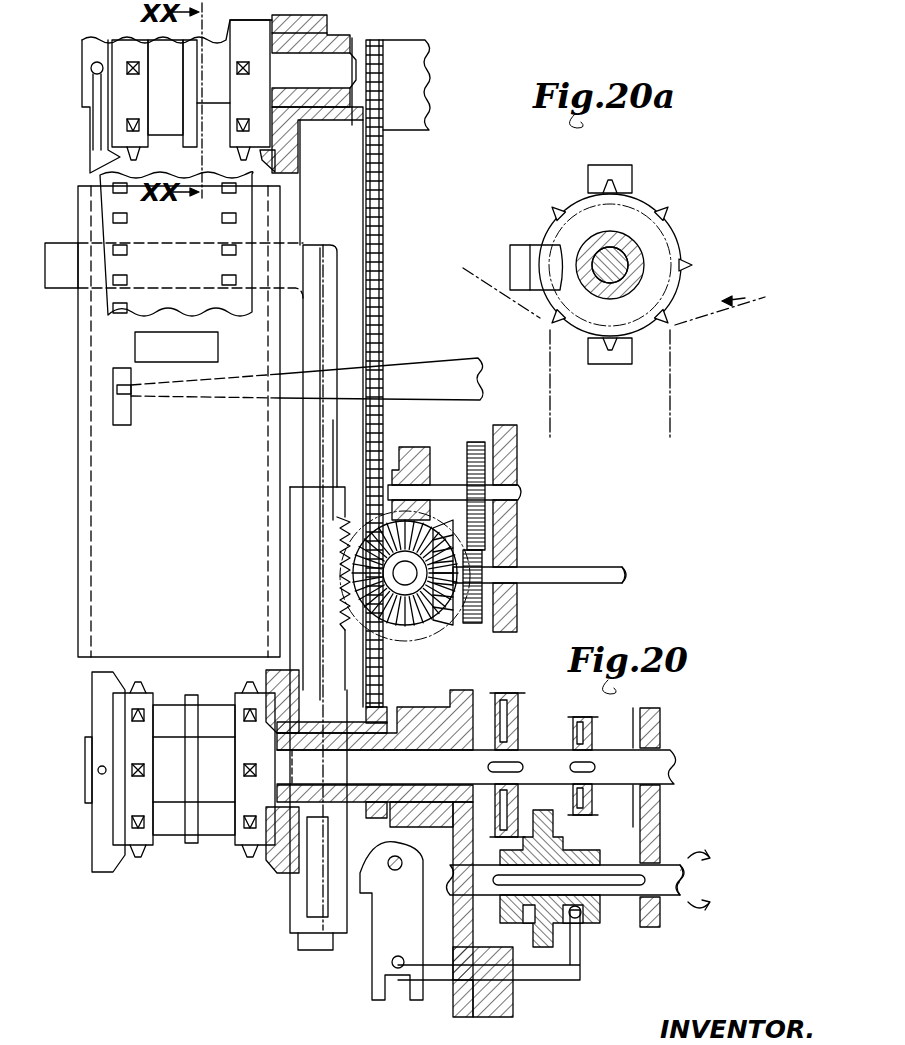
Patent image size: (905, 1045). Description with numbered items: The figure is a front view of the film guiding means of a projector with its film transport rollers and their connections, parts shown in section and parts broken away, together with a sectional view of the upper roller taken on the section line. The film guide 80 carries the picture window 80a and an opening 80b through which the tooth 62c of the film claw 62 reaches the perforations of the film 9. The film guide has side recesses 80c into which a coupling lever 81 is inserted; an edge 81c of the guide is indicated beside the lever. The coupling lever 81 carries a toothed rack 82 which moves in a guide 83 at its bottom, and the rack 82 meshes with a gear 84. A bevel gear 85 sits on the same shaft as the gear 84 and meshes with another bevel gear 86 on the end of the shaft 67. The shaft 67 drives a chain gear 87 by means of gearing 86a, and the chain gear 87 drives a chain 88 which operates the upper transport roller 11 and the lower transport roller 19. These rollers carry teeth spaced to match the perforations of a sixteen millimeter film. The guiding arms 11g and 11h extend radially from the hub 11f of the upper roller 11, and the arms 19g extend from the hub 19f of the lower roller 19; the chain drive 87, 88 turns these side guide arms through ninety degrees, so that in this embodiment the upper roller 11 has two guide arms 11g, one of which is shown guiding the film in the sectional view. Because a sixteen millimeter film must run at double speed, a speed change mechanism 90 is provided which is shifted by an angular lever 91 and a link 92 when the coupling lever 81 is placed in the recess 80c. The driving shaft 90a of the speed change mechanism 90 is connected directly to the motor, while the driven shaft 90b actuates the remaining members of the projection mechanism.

In FIG. 20, the film strip 9 is at (165, 222).
In FIG. 20, the upper transport roller 11 is at (130, 103).
In FIG. 20A, the upper transport roller 11 is at (650, 245).
In FIG. 20, the hub 11f is at (330, 112).
In FIG. 20, the guiding arm 11g is at (290, 170).
In FIG. 20A, the guiding arm 11g is at (622, 178).
In FIG. 20A, the guiding arm 11h is at (520, 265).
In FIG. 20, the lower transport roller 19 is at (168, 822).
In FIG. 20, the hub 19f is at (367, 716).
In FIG. 20, the guiding arm 19g is at (280, 685).
In FIG. 20, the film claw 62 is at (418, 375).
In FIG. 20, the tooth 62c is at (120, 388).
In FIG. 20, the shaft 67 is at (592, 575).
In FIG. 20, the film guide 80 is at (115, 517).
In FIG. 20, the picture window 80a is at (175, 345).
In FIG. 20, the opening 80b is at (118, 410).
In FIG. 20, the side recess 80c is at (272, 243).
In FIG. 20, the coupling lever 81 is at (62, 270).
In FIG. 20, the guide edge 81c is at (86, 240).
In FIG. 20, the toothed rack 82 is at (324, 289).
In FIG. 20, the guide 83 is at (298, 900).
In FIG. 20, the gear 84 is at (445, 622).
In FIG. 20, the bevel gear 85 is at (415, 620).
In FIG. 20, the bevel gear 86 is at (472, 627).
In FIG. 20, the gearing 86a is at (486, 548).
In FIG. 20, the chain gear 87 is at (385, 452).
In FIG. 20, the chain 88 is at (380, 196).
In FIG. 20A, the chain 88 is at (672, 418).
In FIG. 20, the speed change mechanism 90 is at (565, 832).
In FIG. 20, the driving shaft 90a is at (652, 892).
In FIG. 20, the driven shaft 90b is at (650, 760).
In FIG. 20, the angular lever 91 is at (385, 935).
In FIG. 20, the link 92 is at (545, 972).